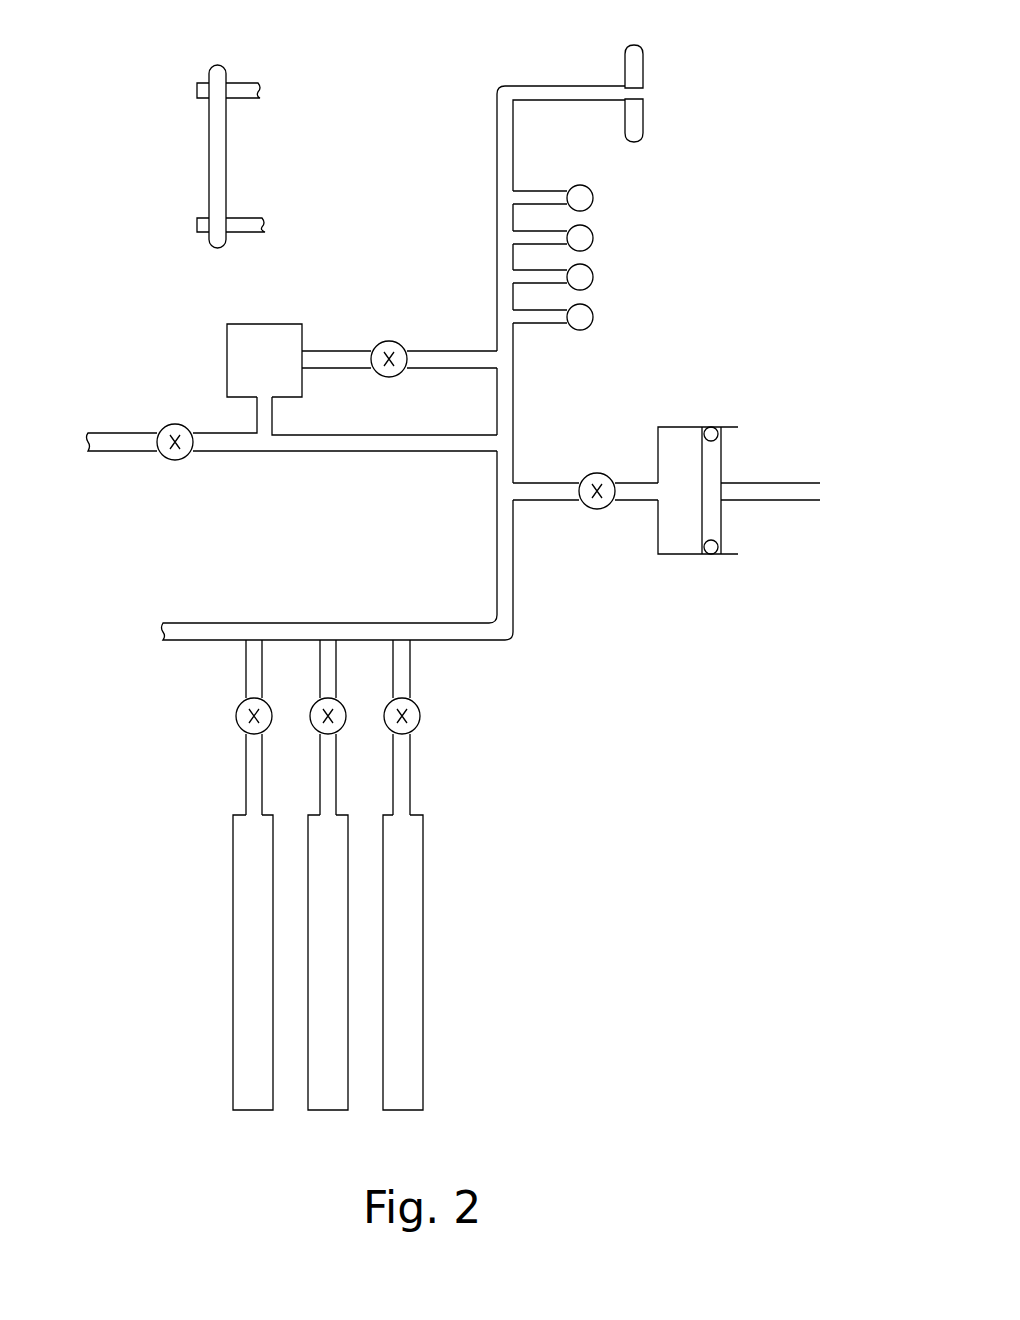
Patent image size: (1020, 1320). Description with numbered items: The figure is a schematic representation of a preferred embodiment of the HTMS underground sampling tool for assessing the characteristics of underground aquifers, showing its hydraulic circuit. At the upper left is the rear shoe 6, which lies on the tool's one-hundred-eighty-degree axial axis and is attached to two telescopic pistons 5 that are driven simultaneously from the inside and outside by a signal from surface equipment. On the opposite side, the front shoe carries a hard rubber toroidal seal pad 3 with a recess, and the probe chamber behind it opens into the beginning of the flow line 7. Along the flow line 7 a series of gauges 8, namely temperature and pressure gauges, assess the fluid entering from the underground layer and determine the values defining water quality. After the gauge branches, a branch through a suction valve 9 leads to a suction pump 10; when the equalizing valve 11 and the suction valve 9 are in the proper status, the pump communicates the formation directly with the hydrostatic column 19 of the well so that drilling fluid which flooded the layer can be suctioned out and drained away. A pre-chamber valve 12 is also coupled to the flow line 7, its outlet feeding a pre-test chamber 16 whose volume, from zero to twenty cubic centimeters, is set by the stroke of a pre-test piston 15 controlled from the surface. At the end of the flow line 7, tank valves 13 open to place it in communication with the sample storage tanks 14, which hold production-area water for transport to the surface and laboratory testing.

The seal pad 3 is at (655, 68).
The telescopic piston 5 is at (243, 105).
The rear shoe 6 is at (195, 147).
The flow line 7 is at (535, 80).
The gauges 8 is at (605, 190).
The suction valve 9 is at (384, 374).
The suction pump 10 is at (264, 347).
The equalizing valve 11 is at (175, 427).
The pre-chamber valve 12 is at (585, 478).
The tank valve 13 is at (343, 727).
The sample storage tanks 14 is at (328, 962).
The pre-test piston 15 is at (770, 477).
The pre-test chamber 16 is at (698, 476).
The hydrostatic column 19 is at (273, 425).